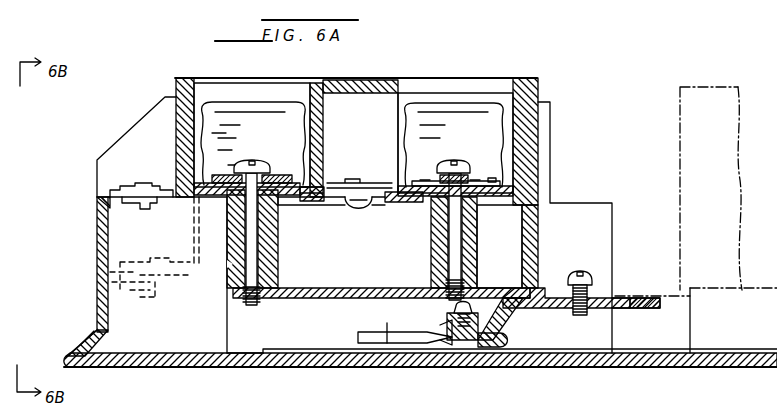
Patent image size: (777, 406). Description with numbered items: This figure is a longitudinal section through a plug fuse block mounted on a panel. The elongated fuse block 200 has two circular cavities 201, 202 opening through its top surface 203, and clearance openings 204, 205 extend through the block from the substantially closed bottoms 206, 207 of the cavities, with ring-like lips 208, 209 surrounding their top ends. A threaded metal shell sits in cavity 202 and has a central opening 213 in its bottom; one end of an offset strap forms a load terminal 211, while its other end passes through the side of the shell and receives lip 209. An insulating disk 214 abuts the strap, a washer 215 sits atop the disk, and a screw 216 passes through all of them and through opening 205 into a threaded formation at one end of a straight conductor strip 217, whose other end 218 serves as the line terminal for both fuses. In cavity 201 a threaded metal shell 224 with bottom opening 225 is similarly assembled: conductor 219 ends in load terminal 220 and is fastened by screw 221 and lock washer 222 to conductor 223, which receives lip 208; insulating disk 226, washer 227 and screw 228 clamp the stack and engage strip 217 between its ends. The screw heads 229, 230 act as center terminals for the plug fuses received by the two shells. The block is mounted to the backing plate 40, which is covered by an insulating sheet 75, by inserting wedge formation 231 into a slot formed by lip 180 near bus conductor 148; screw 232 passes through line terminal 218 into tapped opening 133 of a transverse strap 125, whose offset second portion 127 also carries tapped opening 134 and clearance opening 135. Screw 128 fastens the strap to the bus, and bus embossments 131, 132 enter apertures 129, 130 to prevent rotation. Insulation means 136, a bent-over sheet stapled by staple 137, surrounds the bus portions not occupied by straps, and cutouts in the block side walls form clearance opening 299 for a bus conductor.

The fuse block 200 is at (537, 74).
The cavity 201 is at (458, 90).
The cavity 202 is at (267, 90).
The top surface 203 is at (336, 85).
The clearance opening 204 is at (466, 232).
The clearance opening 205 is at (262, 250).
The cavity bottom 206 is at (430, 205).
The cavity bottom 207 is at (302, 191).
The ring-like lip 208 is at (481, 209).
The ring-like lip 209 is at (238, 176).
The load terminal 211 is at (110, 272).
The central opening 213 is at (233, 230).
The insulating disk 214 is at (296, 186).
The washer 215 is at (284, 175).
The screw 216 is at (258, 268).
The conductor strip 217 is at (292, 293).
The line terminal 218 is at (626, 293).
The conductor 219 is at (150, 209).
The load terminal 220 is at (113, 190).
The screw 221 is at (356, 213).
The lock washer 222 is at (376, 204).
The conductor 223 is at (356, 182).
The threaded metal shell 224 is at (413, 117).
The central opening 225 is at (495, 192).
The insulating disk 226 is at (499, 183).
The washer 227 is at (489, 182).
The screw 228 is at (453, 258).
The screw head 229 is at (237, 136).
The screw head 230 is at (470, 143).
The wedge formation 231 is at (95, 350).
The screw 232 is at (596, 262).
The strap 125 is at (617, 309).
The second portion 127 is at (633, 296).
The screw 128 is at (455, 311).
The aperture 129 is at (482, 328).
The aperture 130 is at (453, 322).
The bus conductor embossment 131 is at (490, 349).
The bus conductor embossment 132 is at (450, 343).
The tapped opening 133 is at (578, 313).
The tapped opening 134 is at (642, 310).
The clearance opening 135 is at (542, 309).
The insulation means 136 is at (358, 334).
The staple 137 is at (376, 324).
The bus conductor 148 is at (425, 341).
The lip 180 is at (78, 338).
The insulating sheet 75 is at (292, 348).
The clearance opening 299 is at (243, 352).
The backing plate 40 is at (572, 367).